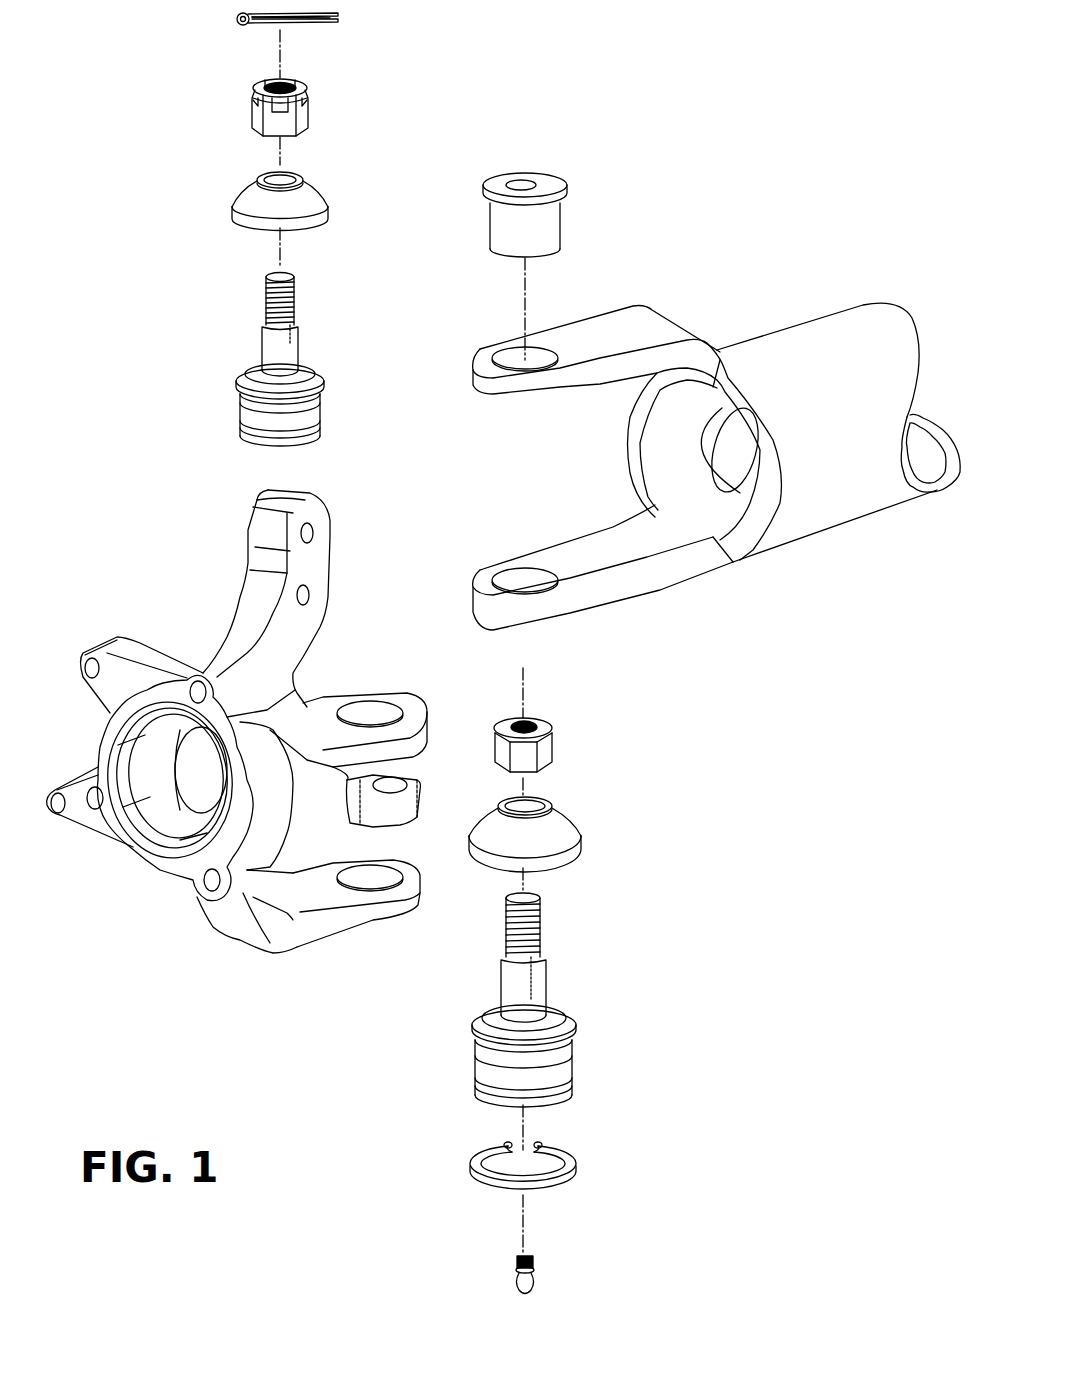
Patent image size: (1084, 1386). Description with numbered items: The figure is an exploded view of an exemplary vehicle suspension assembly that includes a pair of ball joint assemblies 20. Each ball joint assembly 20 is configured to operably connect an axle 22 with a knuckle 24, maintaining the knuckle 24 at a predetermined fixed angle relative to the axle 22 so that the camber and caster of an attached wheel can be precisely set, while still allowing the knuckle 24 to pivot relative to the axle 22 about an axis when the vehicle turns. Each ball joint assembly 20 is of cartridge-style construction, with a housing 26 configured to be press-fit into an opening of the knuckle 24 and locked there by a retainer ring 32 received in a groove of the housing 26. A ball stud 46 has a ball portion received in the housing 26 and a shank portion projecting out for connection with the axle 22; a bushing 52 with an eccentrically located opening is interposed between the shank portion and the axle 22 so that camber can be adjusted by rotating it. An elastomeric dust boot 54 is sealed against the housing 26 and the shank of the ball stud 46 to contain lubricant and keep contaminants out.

The ball joint assembly 20 is at (157, 261).
The axle 22 is at (835, 331).
The knuckle 24 is at (250, 617).
The housing 26 is at (255, 418).
The retainer ring 32 is at (573, 1165).
The ball stud 46 is at (270, 341).
The bushing 52 is at (545, 221).
The dust boot 54 is at (253, 192).